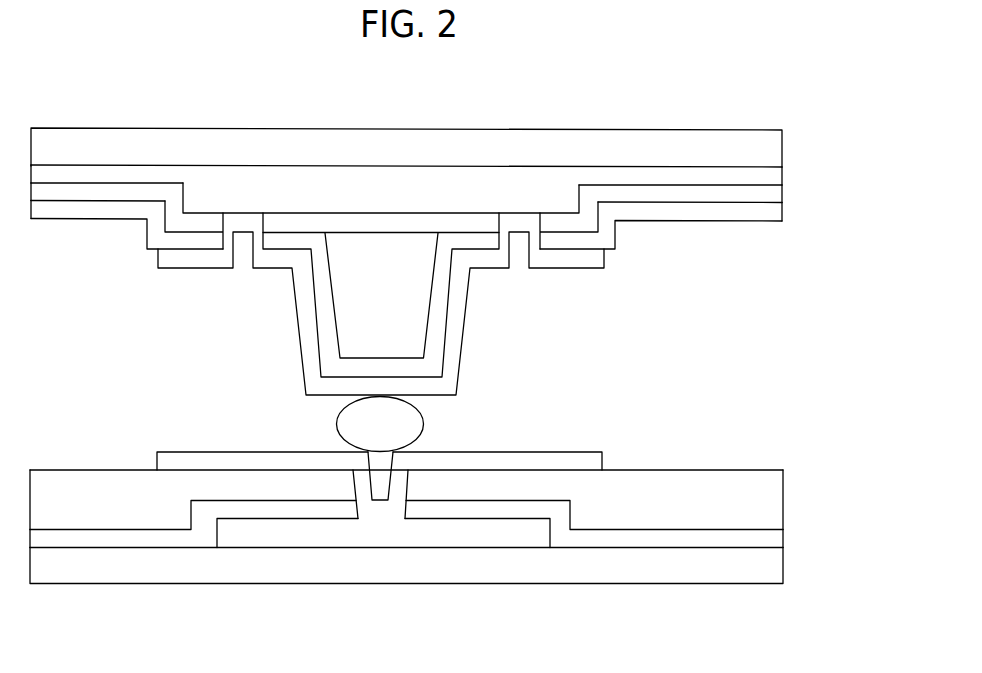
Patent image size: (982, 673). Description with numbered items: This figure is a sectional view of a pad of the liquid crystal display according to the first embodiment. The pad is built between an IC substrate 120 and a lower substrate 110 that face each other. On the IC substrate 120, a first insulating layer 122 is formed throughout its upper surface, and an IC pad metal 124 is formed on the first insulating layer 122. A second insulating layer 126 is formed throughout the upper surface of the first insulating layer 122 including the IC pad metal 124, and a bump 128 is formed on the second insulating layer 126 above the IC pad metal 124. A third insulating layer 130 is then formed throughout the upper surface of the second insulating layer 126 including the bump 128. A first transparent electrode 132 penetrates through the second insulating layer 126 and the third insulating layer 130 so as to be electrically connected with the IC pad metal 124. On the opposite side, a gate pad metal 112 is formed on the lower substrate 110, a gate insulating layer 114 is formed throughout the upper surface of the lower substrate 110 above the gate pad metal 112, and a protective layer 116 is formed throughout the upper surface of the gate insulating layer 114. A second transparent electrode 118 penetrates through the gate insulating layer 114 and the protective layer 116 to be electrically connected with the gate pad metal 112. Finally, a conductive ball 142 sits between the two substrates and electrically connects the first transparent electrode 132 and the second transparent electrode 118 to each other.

The lower substrate 110 is at (777, 566).
The gate pad metal 112 is at (533, 538).
The gate insulating layer 114 is at (777, 541).
The protective layer 116 is at (777, 502).
The second transparent electrode 118 is at (598, 465).
The IC substrate 120 is at (775, 152).
The first insulating layer 122 is at (778, 173).
The IC pad metal 124 is at (559, 197).
The second insulating layer 126 is at (778, 195).
The bump 128 is at (417, 307).
The third insulating layer 130 is at (777, 213).
The first transparent electrode 132 is at (455, 343).
The conductive ball 142 is at (415, 423).